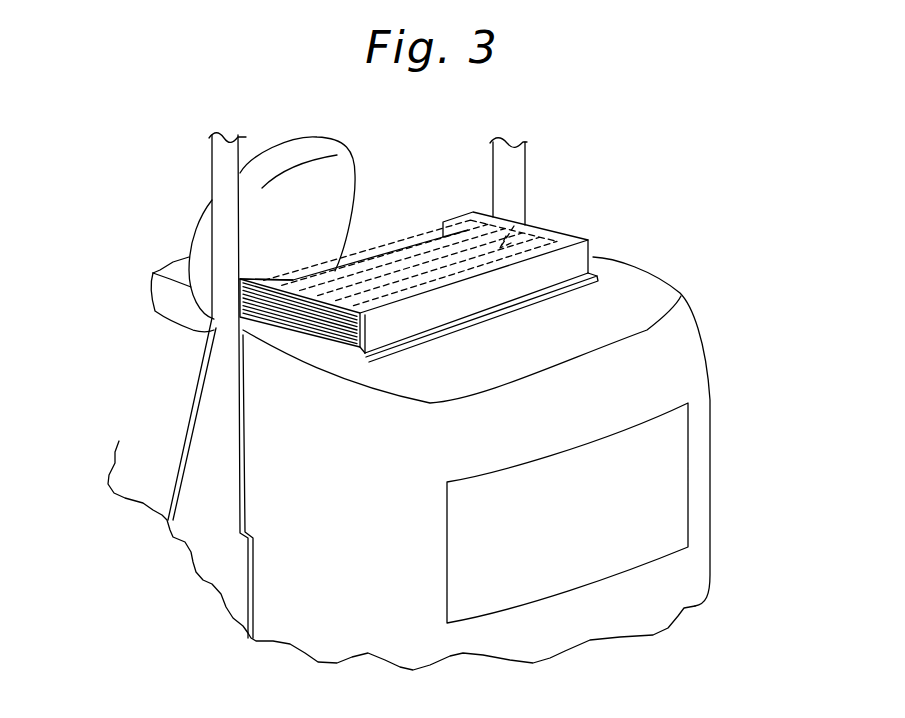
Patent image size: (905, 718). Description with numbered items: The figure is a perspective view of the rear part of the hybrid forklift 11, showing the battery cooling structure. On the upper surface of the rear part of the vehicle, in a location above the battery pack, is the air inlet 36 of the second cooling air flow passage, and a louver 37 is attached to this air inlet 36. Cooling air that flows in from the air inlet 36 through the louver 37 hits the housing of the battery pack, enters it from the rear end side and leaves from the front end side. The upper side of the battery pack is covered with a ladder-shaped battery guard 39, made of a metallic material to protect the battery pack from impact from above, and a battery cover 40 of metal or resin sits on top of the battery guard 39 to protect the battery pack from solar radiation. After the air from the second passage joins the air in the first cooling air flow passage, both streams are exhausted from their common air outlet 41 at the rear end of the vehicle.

The hybrid forklift 11 is at (670, 250).
The air inlet 36 is at (284, 311).
The louver 37 is at (272, 286).
The battery guard 39 is at (514, 226).
The battery cover 40 is at (405, 253).
The common air outlet 41 is at (658, 495).